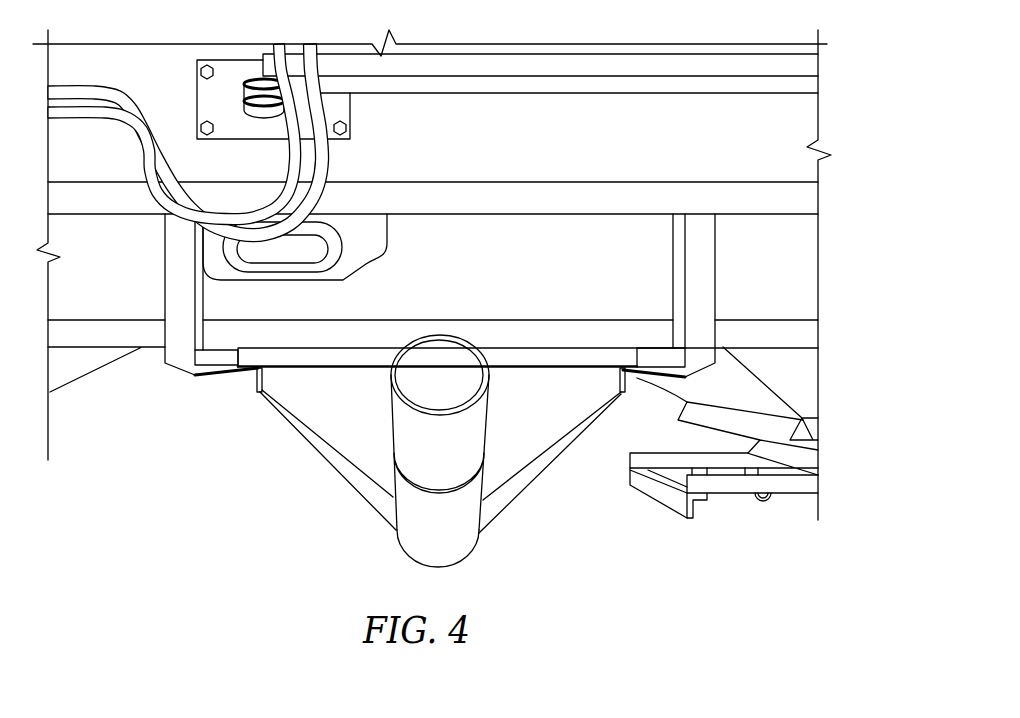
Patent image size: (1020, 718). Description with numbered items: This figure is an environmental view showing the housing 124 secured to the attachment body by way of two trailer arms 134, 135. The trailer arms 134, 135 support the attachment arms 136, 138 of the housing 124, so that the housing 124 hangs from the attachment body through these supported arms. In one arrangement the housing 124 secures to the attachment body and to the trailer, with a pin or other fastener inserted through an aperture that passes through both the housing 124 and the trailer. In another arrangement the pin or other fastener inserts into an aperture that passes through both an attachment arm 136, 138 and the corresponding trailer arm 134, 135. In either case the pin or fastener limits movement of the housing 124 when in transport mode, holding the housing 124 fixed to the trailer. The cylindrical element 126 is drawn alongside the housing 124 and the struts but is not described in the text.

The housing 124 is at (388, 520).
The receiver tube 126 is at (405, 428).
The trailer arm 134 is at (207, 376).
The trailer arm 135 is at (670, 377).
The attachment arm 136 is at (250, 380).
The attachment arm 138 is at (628, 380).